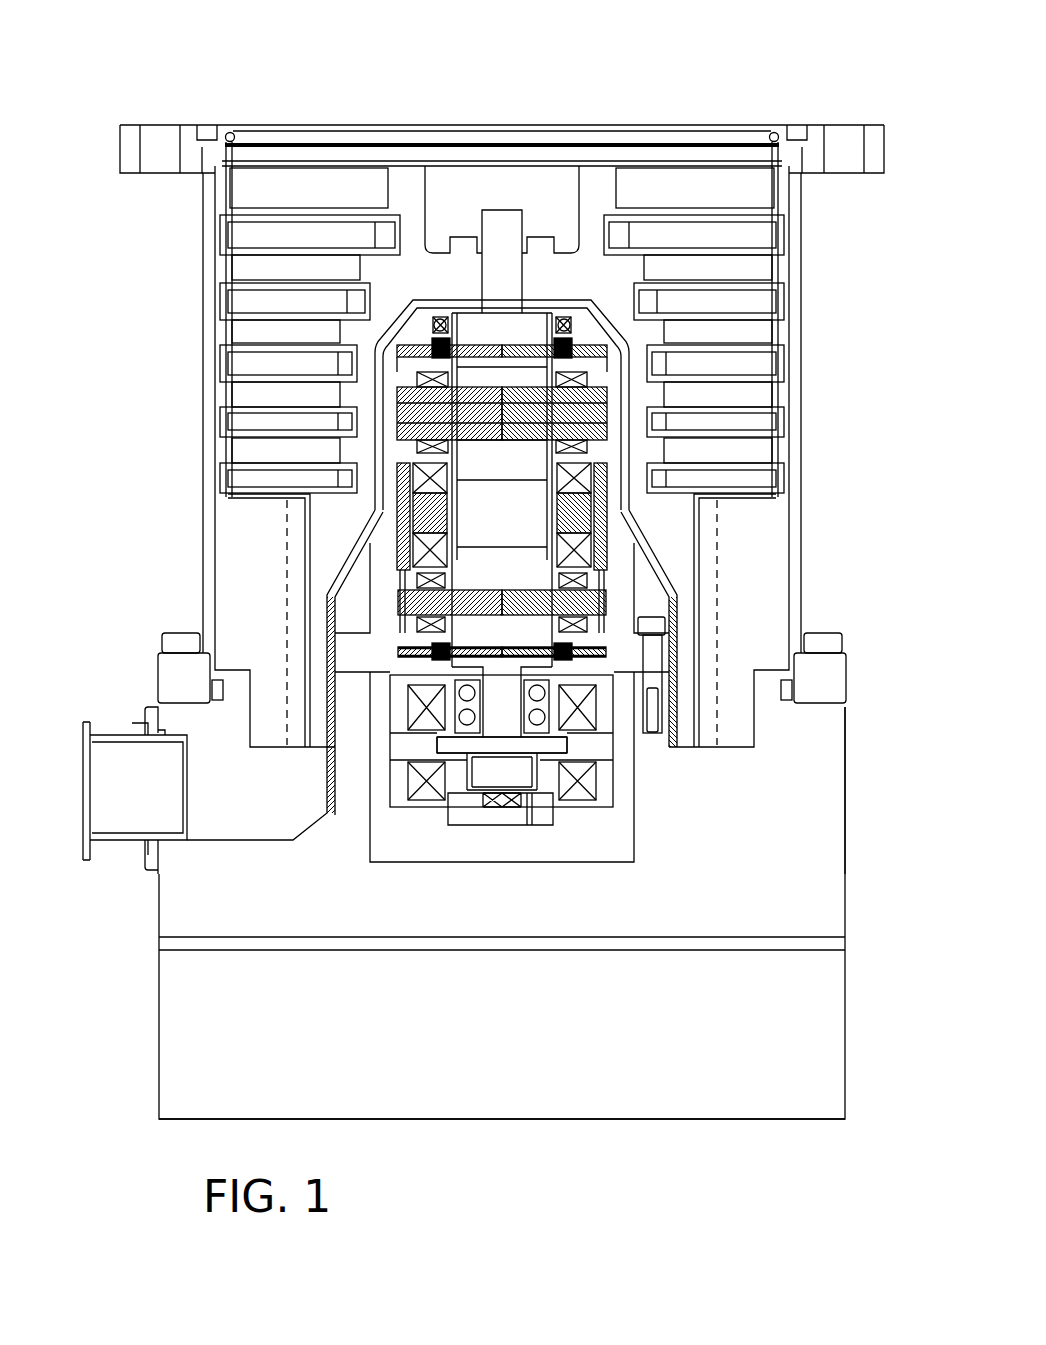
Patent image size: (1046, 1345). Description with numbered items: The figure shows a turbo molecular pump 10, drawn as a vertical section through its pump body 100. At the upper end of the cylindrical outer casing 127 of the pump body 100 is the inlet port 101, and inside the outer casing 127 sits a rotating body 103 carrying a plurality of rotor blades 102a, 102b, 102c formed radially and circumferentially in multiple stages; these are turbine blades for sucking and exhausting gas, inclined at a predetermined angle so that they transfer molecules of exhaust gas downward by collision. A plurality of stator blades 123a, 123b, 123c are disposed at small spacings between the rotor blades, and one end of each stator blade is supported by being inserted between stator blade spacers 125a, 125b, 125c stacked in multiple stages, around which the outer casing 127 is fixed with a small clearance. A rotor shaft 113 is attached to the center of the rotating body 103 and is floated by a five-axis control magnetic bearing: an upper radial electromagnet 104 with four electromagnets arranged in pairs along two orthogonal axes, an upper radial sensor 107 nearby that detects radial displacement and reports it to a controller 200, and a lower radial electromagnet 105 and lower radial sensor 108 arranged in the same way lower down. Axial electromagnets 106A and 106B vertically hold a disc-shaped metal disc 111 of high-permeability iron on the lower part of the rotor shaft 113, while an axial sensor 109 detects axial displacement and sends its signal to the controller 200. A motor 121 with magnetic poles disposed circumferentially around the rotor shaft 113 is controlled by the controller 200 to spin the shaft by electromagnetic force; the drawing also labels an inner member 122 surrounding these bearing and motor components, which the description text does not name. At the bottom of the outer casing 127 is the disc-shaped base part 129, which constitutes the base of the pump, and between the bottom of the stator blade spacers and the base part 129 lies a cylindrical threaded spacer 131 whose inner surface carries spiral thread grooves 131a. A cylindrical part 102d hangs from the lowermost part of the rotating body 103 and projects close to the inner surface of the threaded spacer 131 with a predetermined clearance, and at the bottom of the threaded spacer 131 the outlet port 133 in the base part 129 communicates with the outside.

The turbo molecular pump 10 is at (528, 35).
The pump body 100 is at (831, 195).
The inlet port 101 is at (554, 125).
The rotor blade 102a is at (243, 190).
The rotor blade 102b is at (238, 267).
The rotor blade 102c is at (238, 333).
The cylindrical part 102d is at (312, 595).
The rotating body 103 is at (446, 209).
The upper radial electromagnet 104 is at (604, 415).
The lower radial electromagnet 105 is at (604, 603).
The axial electromagnet 106A is at (600, 707).
The axial electromagnet 106B is at (800, 750).
The upper radial sensor 107 is at (606, 347).
The lower radial sensor 108 is at (604, 650).
The axial sensor 109 is at (556, 810).
The metal disc 111 is at (435, 743).
The rotor shaft 113 is at (548, 365).
The motor 121 is at (598, 520).
The stator holder housing 122 is at (628, 540).
The stator blade 123a is at (227, 233).
The stator blade 123b is at (230, 300).
The stator blade 123c is at (230, 368).
The stator blade spacer 125a is at (223, 178).
The stator blade spacer 125b is at (220, 262).
The stator blade spacer 125c is at (220, 342).
The outer casing 127 is at (800, 270).
The base part 129 is at (807, 754).
The threaded spacer 131 is at (218, 640).
The spiral thread groove 131a is at (290, 555).
The outlet port 133 is at (122, 822).
The controller 200 is at (826, 1133).